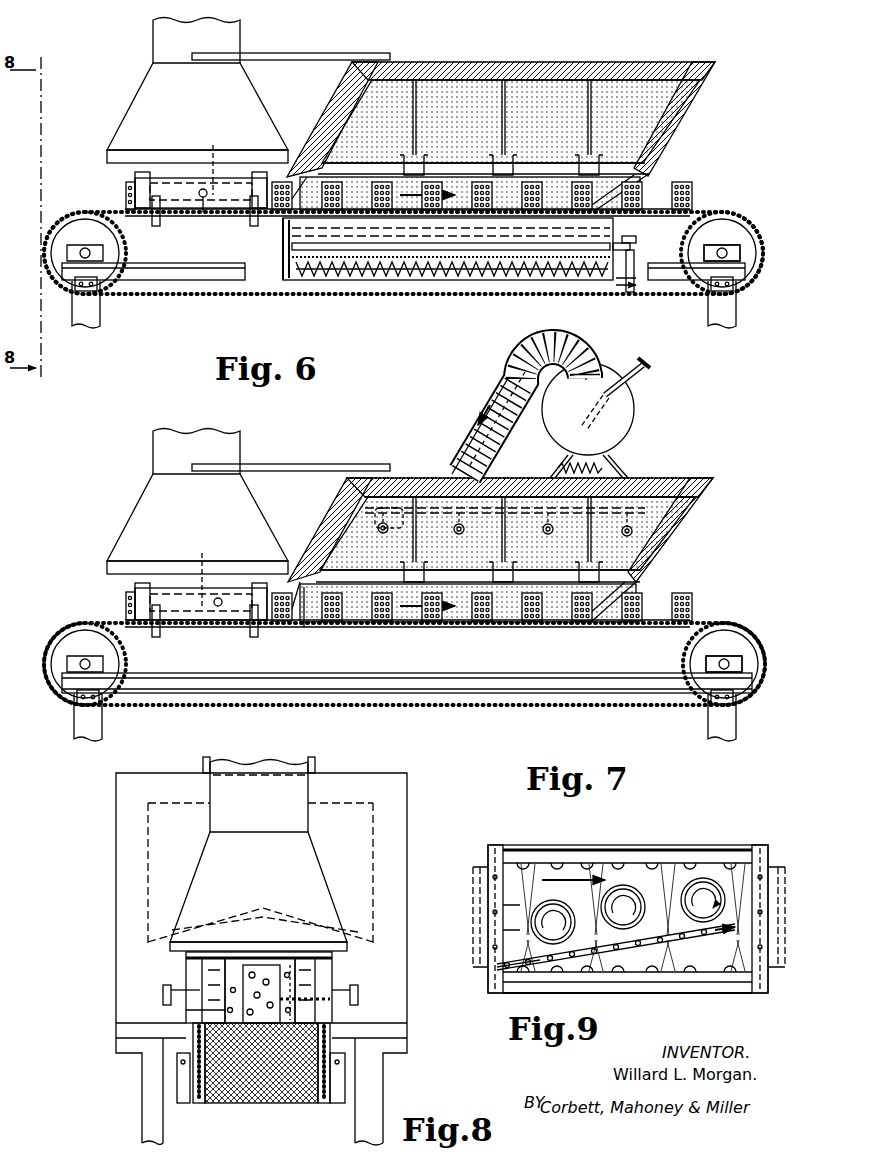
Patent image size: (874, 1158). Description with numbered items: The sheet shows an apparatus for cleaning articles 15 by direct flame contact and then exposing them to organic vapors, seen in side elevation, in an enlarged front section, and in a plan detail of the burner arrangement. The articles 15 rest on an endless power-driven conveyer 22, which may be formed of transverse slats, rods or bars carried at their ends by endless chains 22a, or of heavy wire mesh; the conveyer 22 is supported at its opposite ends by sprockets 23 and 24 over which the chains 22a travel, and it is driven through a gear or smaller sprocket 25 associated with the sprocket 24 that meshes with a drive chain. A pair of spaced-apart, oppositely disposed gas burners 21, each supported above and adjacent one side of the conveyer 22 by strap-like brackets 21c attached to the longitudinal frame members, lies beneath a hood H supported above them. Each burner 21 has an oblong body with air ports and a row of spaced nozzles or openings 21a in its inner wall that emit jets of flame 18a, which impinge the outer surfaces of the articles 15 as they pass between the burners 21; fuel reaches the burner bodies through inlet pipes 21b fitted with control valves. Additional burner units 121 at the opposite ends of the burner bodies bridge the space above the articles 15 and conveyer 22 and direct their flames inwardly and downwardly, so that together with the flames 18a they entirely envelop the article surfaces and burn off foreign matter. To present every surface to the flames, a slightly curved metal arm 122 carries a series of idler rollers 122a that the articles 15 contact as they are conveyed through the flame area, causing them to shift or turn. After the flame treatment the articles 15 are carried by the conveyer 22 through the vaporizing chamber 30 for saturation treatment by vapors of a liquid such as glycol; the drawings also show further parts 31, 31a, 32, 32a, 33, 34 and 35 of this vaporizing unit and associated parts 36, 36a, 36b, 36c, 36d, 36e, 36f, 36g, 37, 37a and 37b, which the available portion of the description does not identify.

In FIG. 6, the hood H is at (238, 88).
In FIG. 7, the hood H is at (160, 490).
In FIG. 8, the hood H is at (305, 848).
In FIG. 6, the articles 15 is at (127, 182).
In FIG. 7, the articles 15 is at (128, 593).
In FIG. 9, the articles 15 is at (486, 928).
In FIG. 6, the burners 21 is at (175, 182).
In FIG. 7, the burners 21 is at (208, 612).
In FIG. 8, the burners 21 is at (202, 968).
In FIG. 9, the burners 21 is at (665, 855).
In FIG. 8, the nozzles or openings 21a is at (313, 967).
In FIG. 9, the nozzles or openings 21a is at (730, 862).
In FIG. 6, the inlet pipes or conduits 21b is at (203, 204).
In FIG. 7, the inlet pipes or conduits 21b is at (221, 599).
In FIG. 8, the inlet pipes or conduits 21b is at (165, 998).
In FIG. 6, the strap-like brackets 21c is at (155, 220).
In FIG. 7, the strap-like brackets 21c is at (156, 637).
In FIG. 8, the strap-like brackets 21c is at (190, 1018).
In FIG. 6, the endless power-driven conveyer 22 is at (100, 208).
In FIG. 7, the endless power-driven conveyer 22 is at (113, 618).
In FIG. 8, the endless power-driven conveyer 22 is at (218, 1104).
In FIG. 9, the endless power-driven conveyer 22 is at (473, 954).
In FIG. 6, the endless chains 22a is at (153, 295).
In FIG. 7, the endless chains 22a is at (412, 706).
In FIG. 8, the endless chains 22a is at (322, 1104).
In FIG. 6, the sprocket 23 is at (110, 243).
In FIG. 7, the sprocket 23 is at (72, 642).
In FIG. 6, the sprocket 24 is at (758, 232).
In FIG. 7, the sprocket 24 is at (693, 648).
In FIG. 6, the gear or smaller sprocket 25 is at (745, 253).
In FIG. 7, the gear or smaller sprocket 25 is at (687, 668).
In FIG. 6, the vaporizing chamber 30 is at (360, 100).
In FIG. 7, the vaporizing chamber 30 is at (649, 531).
In FIG. 8, the vaporizing chamber 30 is at (362, 868).
In FIG. 6, the housing 31 is at (553, 60).
In FIG. 7, the housing 31 is at (686, 540).
In FIG. 8, the housing 31 is at (407, 841).
In FIG. 6, the partition bracket 31a is at (408, 163).
In FIG. 7, the partition bracket 31a is at (424, 568).
In FIG. 6, the insulated top 32 is at (493, 77).
In FIG. 7, the insulated top 32 is at (704, 483).
In FIG. 7, the housing liner 32a is at (327, 518).
In FIG. 6, the chute 33 is at (283, 213).
In FIG. 7, the chute 33 is at (301, 621).
In FIG. 8, the chute 33 is at (203, 1010).
In FIG. 6, the deflector plate 34 is at (637, 177).
In FIG. 7, the deflector plate 34 is at (645, 589).
In FIG. 6, the partition 35 is at (413, 105).
In FIG. 7, the partition 35 is at (505, 540).
In FIG. 6, the tank 36 is at (288, 242).
In FIG. 7, the flask 36a is at (622, 407).
In FIG. 7, the flexible pipe 36b is at (575, 349).
In FIG. 7, the pipe bend 36c is at (529, 341).
In FIG. 7, the spray nozzle 36d is at (383, 528).
In FIG. 7, the spray nozzle 36e is at (553, 532).
In FIG. 7, the pipe leg 36f is at (485, 395).
In FIG. 7, the heater 36g is at (614, 457).
In FIG. 6, the screw conveyor 37 is at (636, 258).
In FIG. 7, the screw conveyor 37 is at (641, 364).
In FIG. 6, the perforated plate 37a is at (390, 258).
In FIG. 6, the tube 37b is at (432, 270).
In FIG. 6, the additional burners or burner units 121 is at (163, 186).
In FIG. 7, the additional burners or burner units 121 is at (163, 594).
In FIG. 8, the additional burners or burner units 121 is at (247, 957).
In FIG. 9, the additional burners or burner units 121 is at (493, 868).
In FIG. 6, the slightly curved metal arm 122 is at (217, 161).
In FIG. 7, the slightly curved metal arm 122 is at (203, 573).
In FIG. 8, the slightly curved metal arm 122 is at (358, 990).
In FIG. 9, the slightly curved metal arm 122 is at (707, 930).
In FIG. 9, the idler rollers 122a is at (673, 932).
In FIG. 8, the jets of flame 18a is at (218, 967).
In FIG. 9, the jets of flame 18a is at (523, 890).